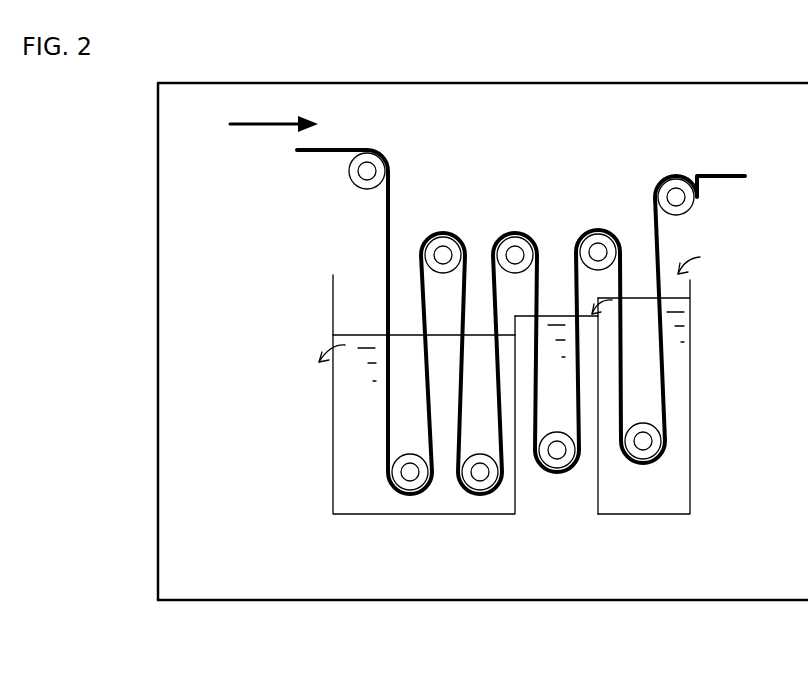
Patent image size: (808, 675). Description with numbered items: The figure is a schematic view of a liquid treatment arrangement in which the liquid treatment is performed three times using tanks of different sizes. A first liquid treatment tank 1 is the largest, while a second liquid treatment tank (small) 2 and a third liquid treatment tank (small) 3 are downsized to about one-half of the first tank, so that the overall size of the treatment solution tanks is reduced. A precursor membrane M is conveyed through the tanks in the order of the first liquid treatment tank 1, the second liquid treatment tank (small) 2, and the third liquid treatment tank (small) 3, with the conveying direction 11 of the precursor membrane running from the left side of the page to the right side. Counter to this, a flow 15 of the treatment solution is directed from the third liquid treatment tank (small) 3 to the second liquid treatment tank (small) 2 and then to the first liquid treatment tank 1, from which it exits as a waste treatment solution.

The conveying direction of precursor membrane 11 is at (275, 130).
The precursor membrane M is at (393, 215).
The first liquid treatment tank 1 is at (513, 526).
The second liquid treatment tank (small) 2 is at (597, 526).
The third liquid treatment tank (small) 3 is at (685, 526).
The flow of treatment solution 15 is at (700, 258).